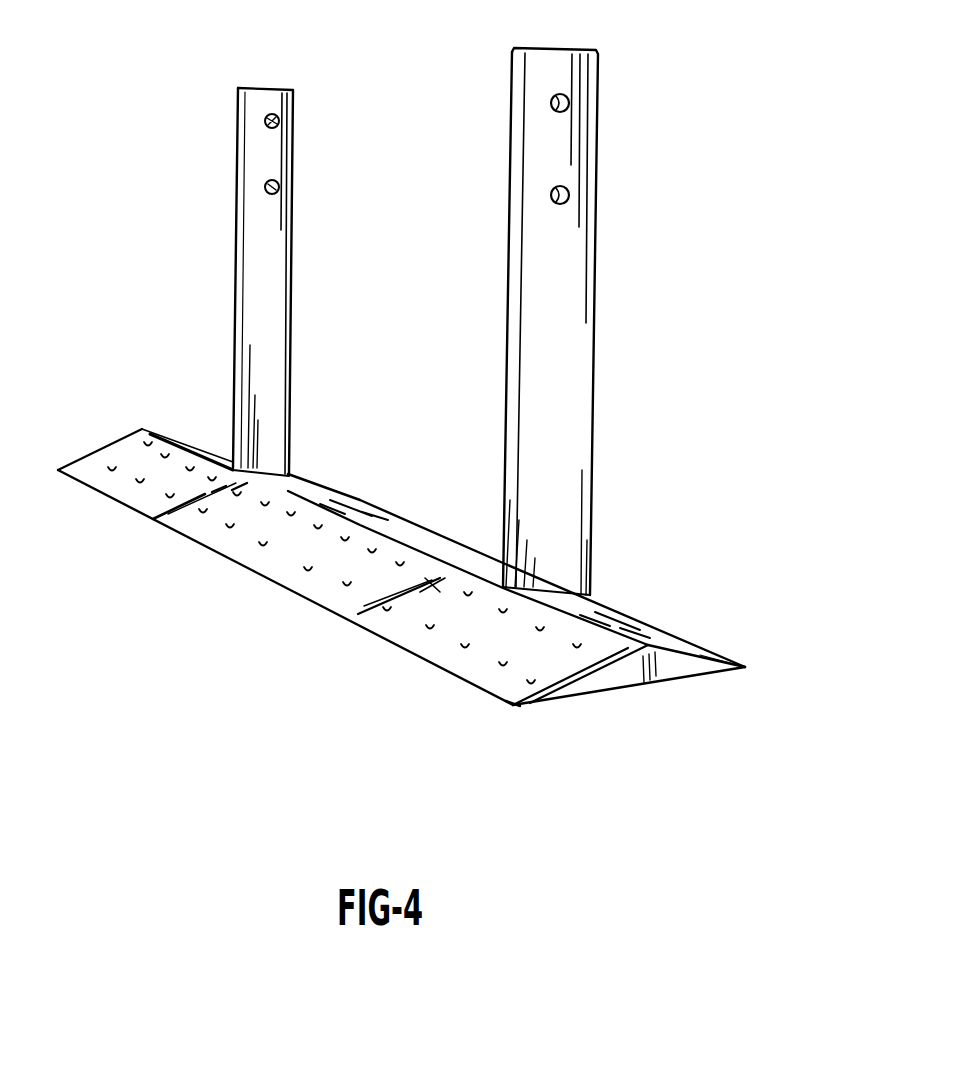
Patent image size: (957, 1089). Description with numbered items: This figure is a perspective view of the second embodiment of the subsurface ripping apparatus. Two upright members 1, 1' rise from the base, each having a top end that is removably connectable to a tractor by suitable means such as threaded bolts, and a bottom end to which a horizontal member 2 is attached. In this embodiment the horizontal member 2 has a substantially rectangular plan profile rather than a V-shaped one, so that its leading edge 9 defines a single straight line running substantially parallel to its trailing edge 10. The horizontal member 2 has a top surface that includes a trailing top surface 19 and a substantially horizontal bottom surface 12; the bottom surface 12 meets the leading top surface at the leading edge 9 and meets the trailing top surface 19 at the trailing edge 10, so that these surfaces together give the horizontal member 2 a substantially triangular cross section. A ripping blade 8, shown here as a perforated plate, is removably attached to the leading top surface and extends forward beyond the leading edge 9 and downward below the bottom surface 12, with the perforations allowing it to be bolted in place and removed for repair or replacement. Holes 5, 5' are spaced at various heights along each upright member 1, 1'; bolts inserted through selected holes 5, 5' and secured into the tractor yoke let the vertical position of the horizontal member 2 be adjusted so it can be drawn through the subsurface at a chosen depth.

The upright member 1 is at (306, 282).
The upright member 1' is at (615, 321).
The horizontal member 2 is at (670, 672).
The hole 5 is at (326, 169).
The hole 5' is at (334, 95).
The ripping blade 8 is at (270, 561).
The leading edge 9 is at (533, 705).
The trailing edge 10 is at (747, 667).
The bottom surface 12 is at (607, 700).
The trailing top surface 19 is at (407, 532).